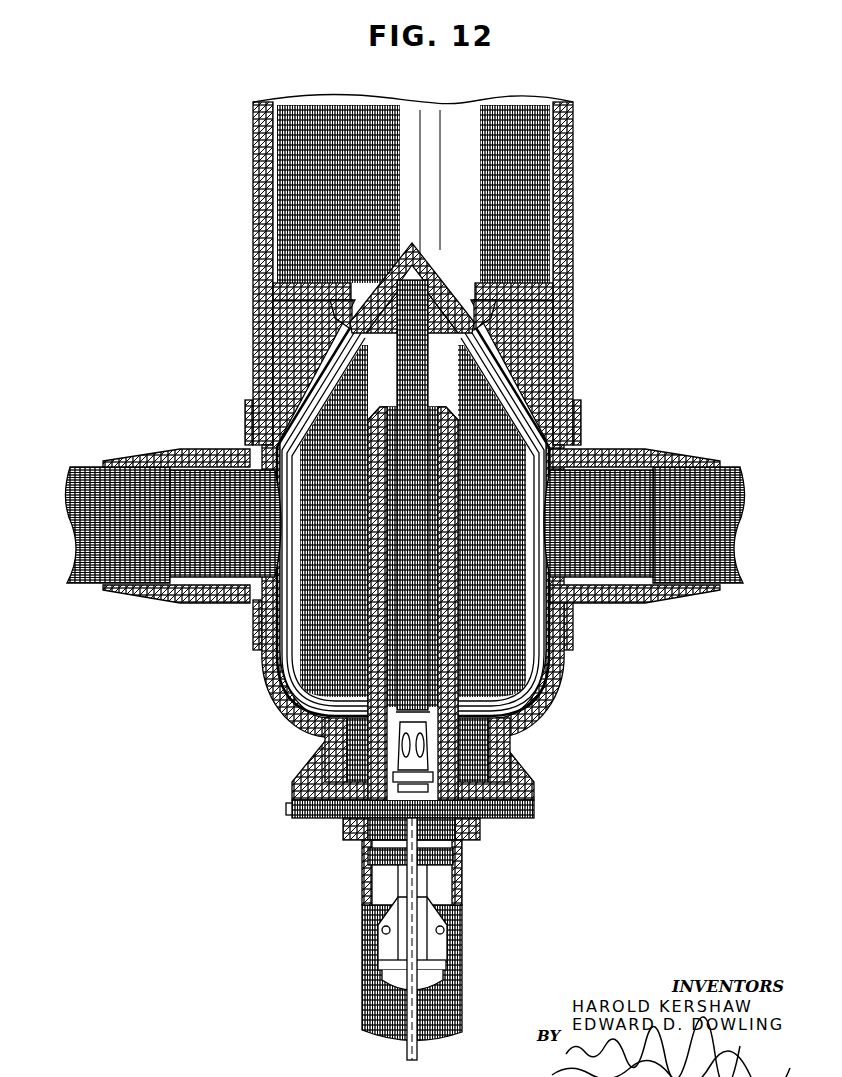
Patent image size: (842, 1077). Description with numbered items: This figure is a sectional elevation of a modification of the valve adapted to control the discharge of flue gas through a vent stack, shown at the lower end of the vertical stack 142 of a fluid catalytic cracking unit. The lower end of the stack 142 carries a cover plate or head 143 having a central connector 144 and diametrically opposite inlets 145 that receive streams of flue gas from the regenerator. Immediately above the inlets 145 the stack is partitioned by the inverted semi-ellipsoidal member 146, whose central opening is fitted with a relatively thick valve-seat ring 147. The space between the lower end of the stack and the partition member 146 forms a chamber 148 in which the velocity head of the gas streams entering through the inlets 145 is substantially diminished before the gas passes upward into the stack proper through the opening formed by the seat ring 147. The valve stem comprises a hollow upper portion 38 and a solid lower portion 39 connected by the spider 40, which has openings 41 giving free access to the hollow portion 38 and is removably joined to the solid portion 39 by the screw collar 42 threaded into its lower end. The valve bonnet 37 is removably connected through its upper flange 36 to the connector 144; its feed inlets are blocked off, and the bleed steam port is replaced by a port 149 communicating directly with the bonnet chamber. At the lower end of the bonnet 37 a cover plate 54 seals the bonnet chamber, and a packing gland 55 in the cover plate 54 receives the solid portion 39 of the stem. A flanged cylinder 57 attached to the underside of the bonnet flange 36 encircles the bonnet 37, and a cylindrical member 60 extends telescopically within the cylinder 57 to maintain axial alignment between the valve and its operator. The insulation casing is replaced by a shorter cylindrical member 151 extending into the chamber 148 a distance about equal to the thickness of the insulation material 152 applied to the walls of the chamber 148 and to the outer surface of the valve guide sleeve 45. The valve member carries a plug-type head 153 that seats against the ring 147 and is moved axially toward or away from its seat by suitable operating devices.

The bonnet flange 36 is at (536, 808).
The valve bonnet 37 is at (478, 846).
The tubular portion of valve stem 38 is at (402, 372).
The solid rod portion of valve stem 39 is at (410, 1050).
The spider 40 is at (394, 794).
The openings 41 is at (398, 735).
The screw collar 42 is at (418, 794).
The valve guide sleeve 45 is at (433, 408).
The cover plate 54 is at (466, 865).
The packing gland 55 is at (410, 922).
The flanged cylinder 57 is at (362, 863).
The cylindrical member 60 is at (377, 893).
The vertical stack 142 is at (576, 262).
The cover plate or head 143 is at (548, 718).
The central connector 144 is at (502, 783).
The inlets 145 is at (80, 518).
The inverted semi-ellipsoidal member 146 is at (266, 388).
The valve-seat ring 147 is at (470, 282).
The chamber 148 is at (518, 430).
The port 149 is at (288, 809).
The cylindrical member 151 is at (333, 752).
The insulation material 152 is at (372, 433).
The plug-type head 153 is at (397, 268).